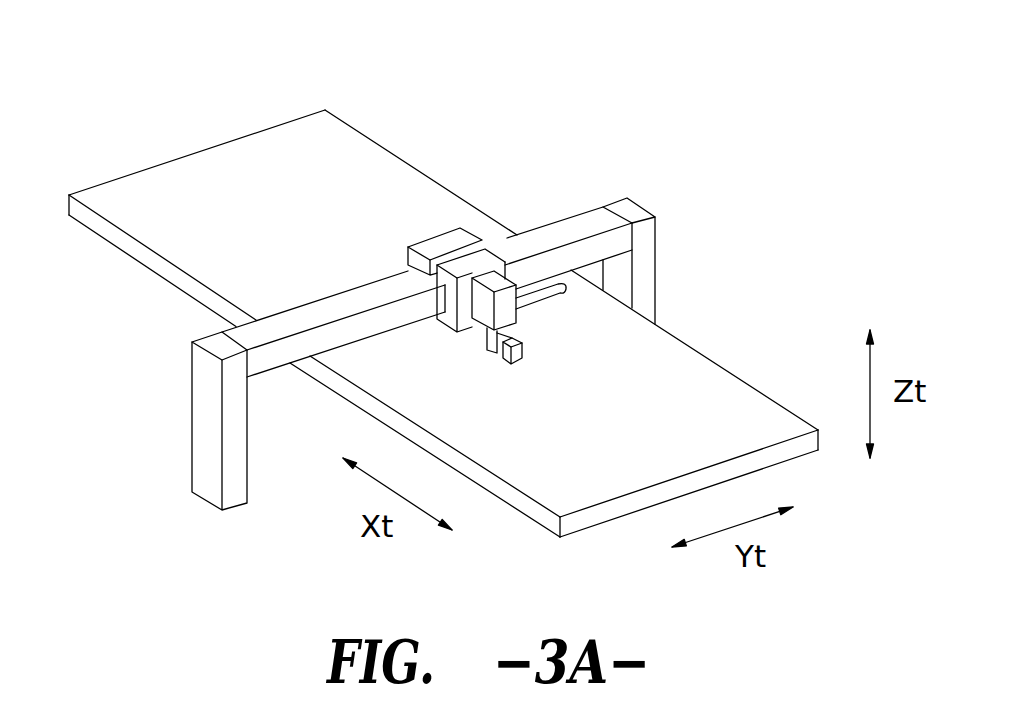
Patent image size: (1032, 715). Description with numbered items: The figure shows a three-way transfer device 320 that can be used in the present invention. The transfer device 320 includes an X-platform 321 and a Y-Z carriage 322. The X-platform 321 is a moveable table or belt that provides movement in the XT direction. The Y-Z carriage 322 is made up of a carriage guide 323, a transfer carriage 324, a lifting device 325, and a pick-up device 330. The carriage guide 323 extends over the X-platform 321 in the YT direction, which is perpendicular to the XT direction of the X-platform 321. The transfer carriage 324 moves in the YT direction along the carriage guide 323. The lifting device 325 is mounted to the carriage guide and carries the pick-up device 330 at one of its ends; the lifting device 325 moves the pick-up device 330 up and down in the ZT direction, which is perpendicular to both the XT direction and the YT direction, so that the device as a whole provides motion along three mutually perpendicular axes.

The 3-way transfer device 320 is at (443, 272).
The X-platform 321 is at (338, 142).
The Y-Z carriage 322 is at (642, 205).
The carriage guide 323 is at (657, 238).
The transfer carriage 324 is at (442, 235).
The lifting device 325 is at (516, 312).
The pick-up device 330 is at (517, 350).